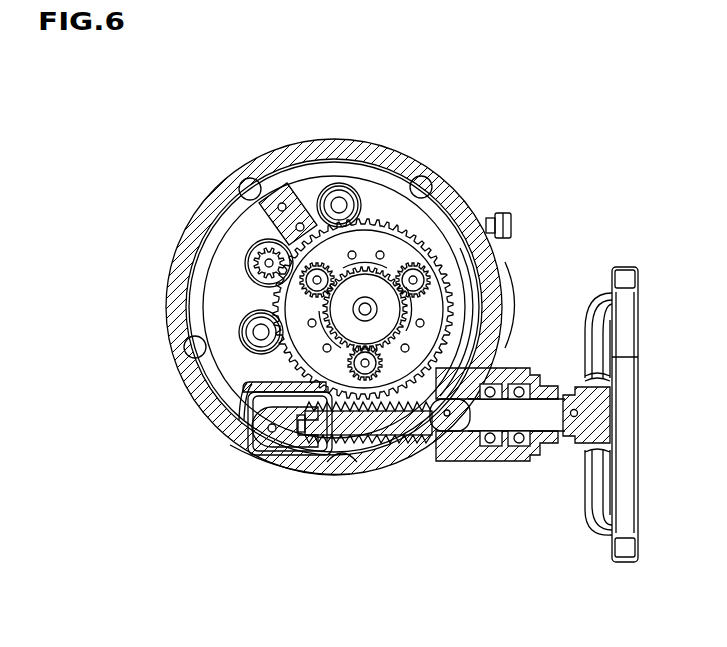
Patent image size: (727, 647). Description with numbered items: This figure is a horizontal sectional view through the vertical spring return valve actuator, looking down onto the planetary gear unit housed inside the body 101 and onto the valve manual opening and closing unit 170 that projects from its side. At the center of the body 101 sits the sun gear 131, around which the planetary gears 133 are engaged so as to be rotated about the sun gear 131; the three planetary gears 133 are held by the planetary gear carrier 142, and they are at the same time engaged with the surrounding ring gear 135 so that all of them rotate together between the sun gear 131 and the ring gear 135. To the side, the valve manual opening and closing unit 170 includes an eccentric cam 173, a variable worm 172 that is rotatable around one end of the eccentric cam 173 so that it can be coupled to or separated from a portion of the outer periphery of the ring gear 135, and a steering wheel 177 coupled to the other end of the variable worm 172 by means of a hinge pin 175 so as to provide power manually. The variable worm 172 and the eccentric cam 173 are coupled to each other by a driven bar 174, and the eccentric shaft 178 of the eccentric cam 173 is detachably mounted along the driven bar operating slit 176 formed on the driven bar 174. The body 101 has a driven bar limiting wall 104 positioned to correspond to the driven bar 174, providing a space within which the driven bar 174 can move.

The body 101 is at (306, 147).
The driven bar limiting wall 104 is at (250, 372).
The sun gear 131 is at (418, 230).
The planetary gears 133 is at (457, 277).
The ring gear 135 is at (481, 211).
The planetary gear carrier 142 is at (372, 250).
The valve manual opening and closing unit 170 is at (520, 471).
The variable worm 172 is at (384, 437).
The eccentric cam 173 is at (247, 400).
The driven bar 174 is at (273, 460).
The hinge pin 175 is at (448, 416).
The driven bar operating slit 176 is at (270, 425).
The steering wheel 177 is at (623, 267).
The eccentric shaft 178 is at (260, 410).